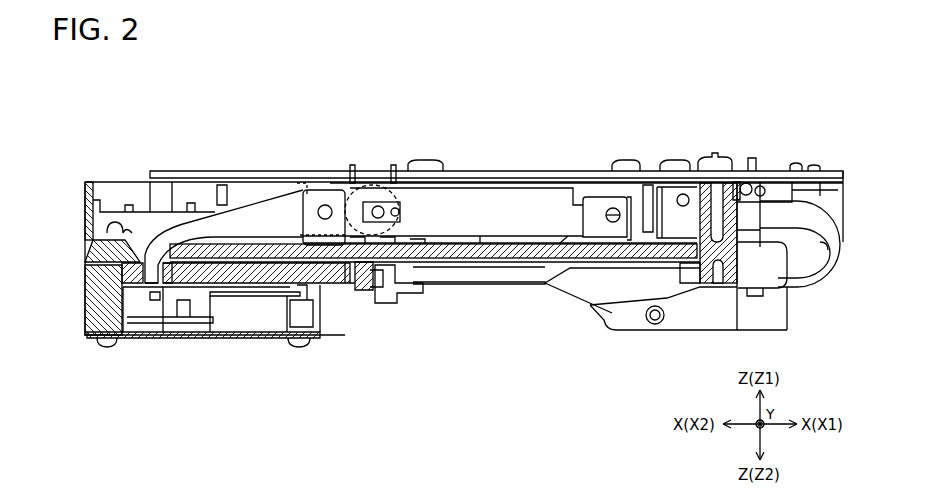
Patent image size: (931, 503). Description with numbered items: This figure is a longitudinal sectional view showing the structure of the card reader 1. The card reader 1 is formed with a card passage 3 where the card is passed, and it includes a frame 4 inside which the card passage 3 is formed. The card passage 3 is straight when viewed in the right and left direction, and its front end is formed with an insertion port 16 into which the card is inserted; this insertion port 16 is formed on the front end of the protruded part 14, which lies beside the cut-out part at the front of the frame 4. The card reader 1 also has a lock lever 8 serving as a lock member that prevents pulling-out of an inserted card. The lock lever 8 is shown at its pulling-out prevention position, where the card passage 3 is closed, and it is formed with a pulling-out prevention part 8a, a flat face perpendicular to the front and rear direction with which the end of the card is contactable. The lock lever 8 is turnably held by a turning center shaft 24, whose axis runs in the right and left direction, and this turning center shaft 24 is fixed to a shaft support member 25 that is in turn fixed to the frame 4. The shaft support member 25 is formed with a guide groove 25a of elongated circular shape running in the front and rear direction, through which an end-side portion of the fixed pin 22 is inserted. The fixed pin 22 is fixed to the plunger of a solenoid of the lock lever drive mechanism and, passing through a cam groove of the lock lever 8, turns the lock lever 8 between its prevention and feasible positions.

The card reader 1 is at (787, 103).
The card passage 3 is at (492, 260).
The frame 4 is at (703, 195).
The lock lever 8 is at (287, 193).
The pulling-out prevention part 8a is at (177, 284).
The protruded part 14 is at (223, 290).
The insertion port 16 is at (86, 262).
The fixed pin 22 is at (380, 205).
The turning center shaft 24 is at (326, 192).
The shaft support member 25 is at (472, 188).
The guide groove 25a is at (400, 209).